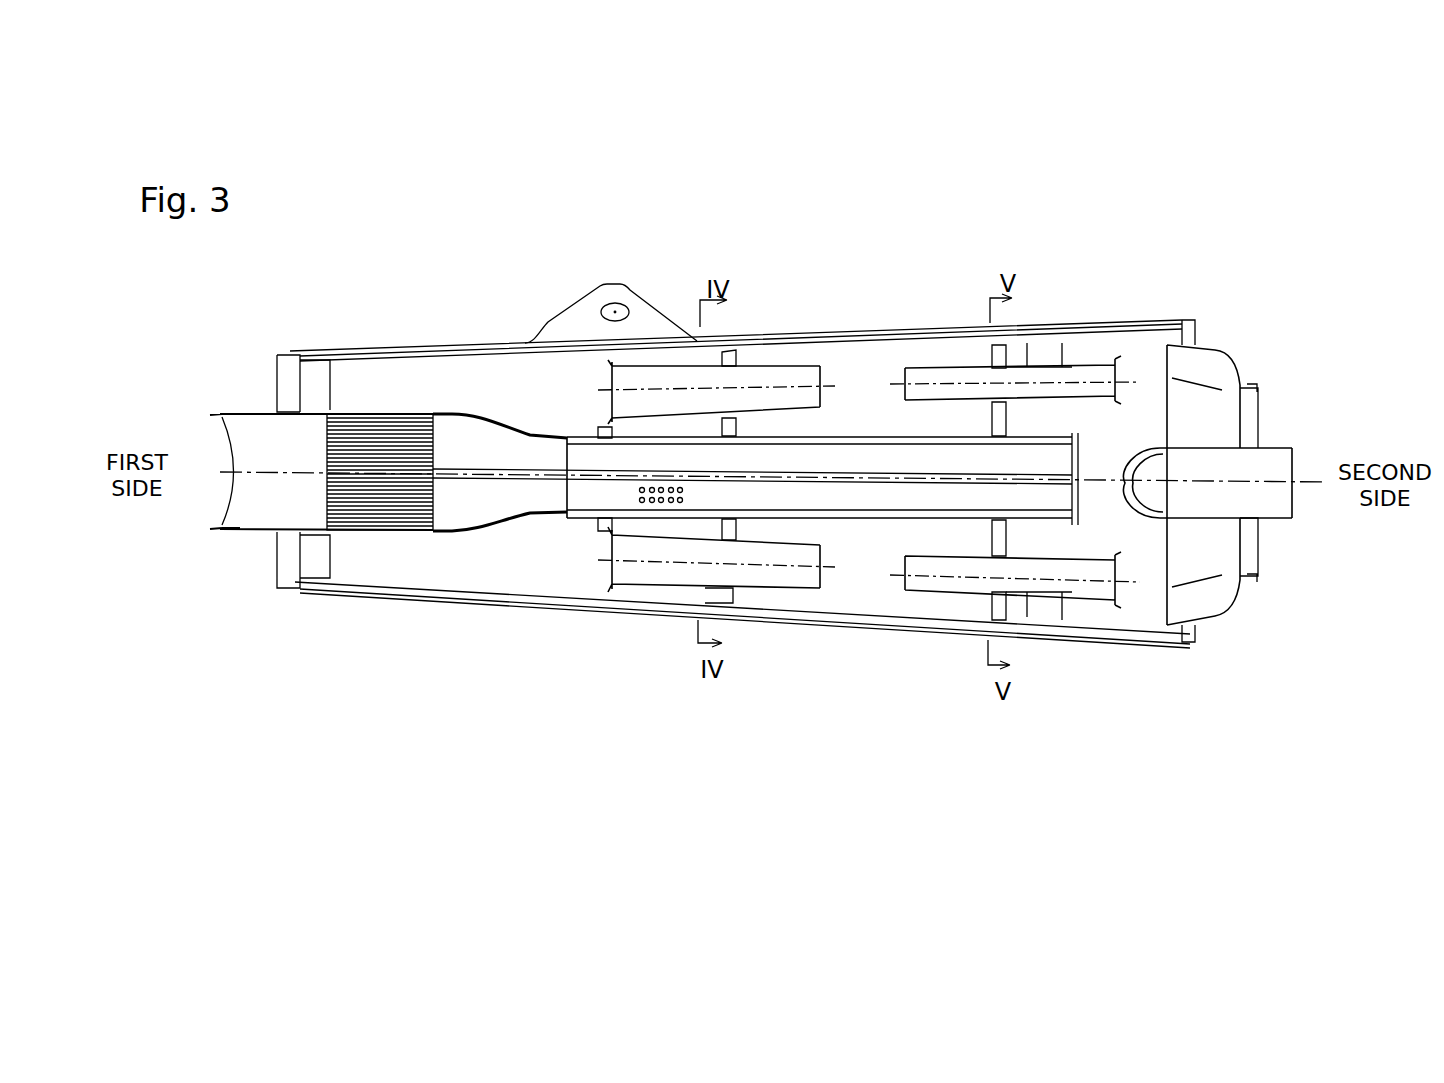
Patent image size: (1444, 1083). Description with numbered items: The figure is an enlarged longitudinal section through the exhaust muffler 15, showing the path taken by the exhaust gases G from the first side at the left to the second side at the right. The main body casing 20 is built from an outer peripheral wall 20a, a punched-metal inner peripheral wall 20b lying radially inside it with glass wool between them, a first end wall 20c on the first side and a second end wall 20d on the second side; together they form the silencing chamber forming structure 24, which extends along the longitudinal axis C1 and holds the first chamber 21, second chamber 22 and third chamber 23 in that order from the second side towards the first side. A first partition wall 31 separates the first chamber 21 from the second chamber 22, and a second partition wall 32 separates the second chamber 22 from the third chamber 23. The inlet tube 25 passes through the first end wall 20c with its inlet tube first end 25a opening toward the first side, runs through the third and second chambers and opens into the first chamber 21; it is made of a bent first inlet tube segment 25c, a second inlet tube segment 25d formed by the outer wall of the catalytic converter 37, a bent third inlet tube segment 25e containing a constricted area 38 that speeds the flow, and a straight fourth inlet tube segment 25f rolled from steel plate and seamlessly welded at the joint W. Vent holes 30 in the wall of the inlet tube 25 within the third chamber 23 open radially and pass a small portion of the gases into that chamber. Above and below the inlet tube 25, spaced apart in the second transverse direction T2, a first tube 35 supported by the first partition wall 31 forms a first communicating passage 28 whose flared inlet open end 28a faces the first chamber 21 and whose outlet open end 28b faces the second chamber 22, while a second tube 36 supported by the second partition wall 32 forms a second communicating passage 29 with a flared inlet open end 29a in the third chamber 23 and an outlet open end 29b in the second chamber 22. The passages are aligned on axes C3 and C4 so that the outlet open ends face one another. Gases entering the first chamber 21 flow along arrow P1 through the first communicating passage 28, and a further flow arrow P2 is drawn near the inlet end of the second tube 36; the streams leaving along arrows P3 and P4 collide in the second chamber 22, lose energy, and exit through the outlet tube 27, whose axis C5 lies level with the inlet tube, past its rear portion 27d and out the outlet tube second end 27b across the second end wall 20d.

The exhaust muffler 15 is at (745, 255).
The main body casing 20 is at (737, 464).
The outer peripheral wall 20a is at (365, 351).
The inner peripheral wall 20b is at (422, 358).
The first end wall 20c is at (300, 560).
The second end wall 20d is at (1208, 612).
The first chamber 21 is at (1088, 352).
The second chamber 22 is at (866, 600).
The third chamber 23 is at (483, 560).
The silencing chamber forming structure 24 is at (510, 573).
The inlet tube 25 is at (578, 518).
The inlet tube first end 25a is at (218, 412).
The first inlet tube segment 25c is at (240, 530).
The second inlet tube segment 25d is at (385, 535).
The third inlet tube segment 25e is at (455, 535).
The fourth inlet tube segment 25f is at (793, 600).
The outlet tube 27 is at (1057, 502).
The outlet tube second end 27b is at (1293, 463).
The rear portion of outlet tube 27d is at (1258, 446).
The first communicating passage 28 is at (958, 375).
The inlet open end of first communicating passage 28a is at (1119, 364).
The outlet open end of first communicating passage 28b is at (905, 378).
The second communicating passage 29 is at (800, 365).
The inlet open end of second communicating passage 29a is at (600, 364).
The outlet open end of second communicating passage 29b is at (787, 378).
The vent holes 30 is at (655, 503).
The first partition wall 31 is at (1030, 352).
The second partition wall 32 is at (738, 356).
The first tube 35 is at (1063, 364).
The second tube 36 is at (770, 365).
The catalytic converter 37 is at (355, 515).
The constricted area 38 is at (525, 600).
The exhaust gases G is at (225, 476).
The arrow P1 is at (1135, 388).
The second flow path P2 is at (594, 404).
The arrows P3 is at (890, 389).
The arrows P4 is at (848, 392).
The joint W is at (877, 473).
The second transverse direction T2 is at (815, 690).
The longitudinal axis of main body casing C1 is at (612, 535).
The longitudinal axes of first communicating passages C3 is at (944, 384).
The axes of second communicating passages C4 is at (660, 390).
The longitudinal axis of outlet tube C5 is at (1260, 487).